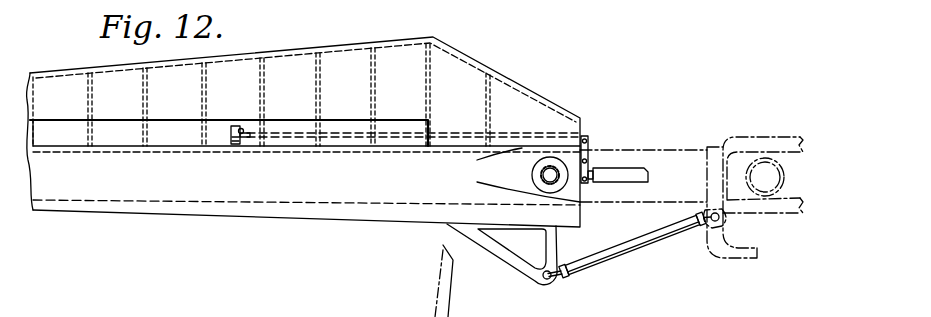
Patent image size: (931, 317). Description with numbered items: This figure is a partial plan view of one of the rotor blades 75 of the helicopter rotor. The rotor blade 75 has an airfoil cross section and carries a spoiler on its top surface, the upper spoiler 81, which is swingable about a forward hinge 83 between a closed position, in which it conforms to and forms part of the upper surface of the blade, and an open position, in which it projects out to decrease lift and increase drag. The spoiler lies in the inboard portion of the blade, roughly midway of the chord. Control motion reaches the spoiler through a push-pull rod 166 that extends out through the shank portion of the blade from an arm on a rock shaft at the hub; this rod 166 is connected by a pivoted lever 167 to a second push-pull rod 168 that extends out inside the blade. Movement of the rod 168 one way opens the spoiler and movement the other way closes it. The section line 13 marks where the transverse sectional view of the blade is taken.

The section line 13- 13 is at (215, 75).
The rotor blade 75 is at (97, 214).
The upper spoiler 81 is at (288, 147).
The hinge 83 is at (307, 96).
The push-pull rod 168 is at (502, 138).
The pivoted lever 167 is at (587, 166).
The push-pull rod 166 is at (634, 170).